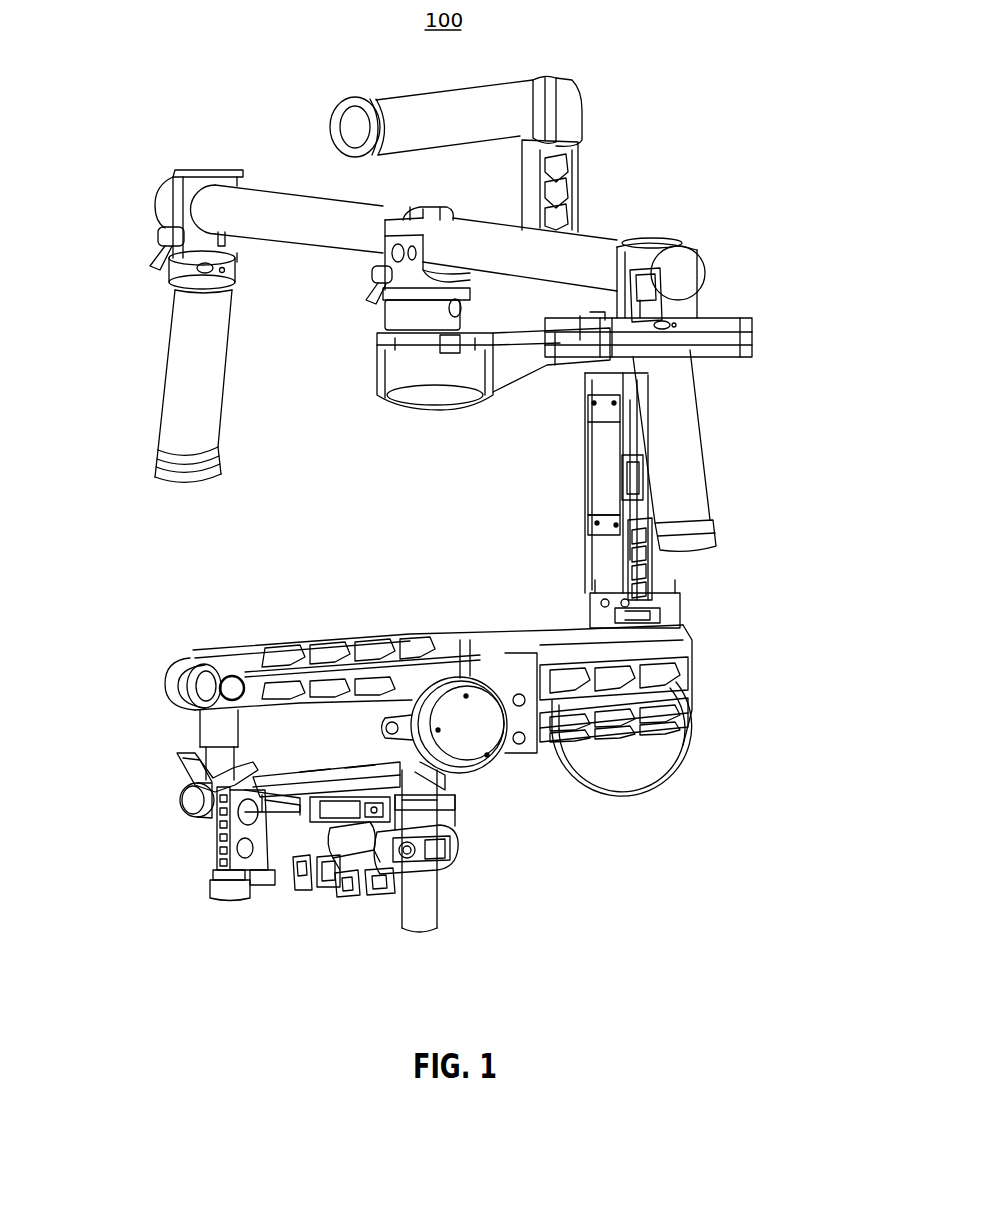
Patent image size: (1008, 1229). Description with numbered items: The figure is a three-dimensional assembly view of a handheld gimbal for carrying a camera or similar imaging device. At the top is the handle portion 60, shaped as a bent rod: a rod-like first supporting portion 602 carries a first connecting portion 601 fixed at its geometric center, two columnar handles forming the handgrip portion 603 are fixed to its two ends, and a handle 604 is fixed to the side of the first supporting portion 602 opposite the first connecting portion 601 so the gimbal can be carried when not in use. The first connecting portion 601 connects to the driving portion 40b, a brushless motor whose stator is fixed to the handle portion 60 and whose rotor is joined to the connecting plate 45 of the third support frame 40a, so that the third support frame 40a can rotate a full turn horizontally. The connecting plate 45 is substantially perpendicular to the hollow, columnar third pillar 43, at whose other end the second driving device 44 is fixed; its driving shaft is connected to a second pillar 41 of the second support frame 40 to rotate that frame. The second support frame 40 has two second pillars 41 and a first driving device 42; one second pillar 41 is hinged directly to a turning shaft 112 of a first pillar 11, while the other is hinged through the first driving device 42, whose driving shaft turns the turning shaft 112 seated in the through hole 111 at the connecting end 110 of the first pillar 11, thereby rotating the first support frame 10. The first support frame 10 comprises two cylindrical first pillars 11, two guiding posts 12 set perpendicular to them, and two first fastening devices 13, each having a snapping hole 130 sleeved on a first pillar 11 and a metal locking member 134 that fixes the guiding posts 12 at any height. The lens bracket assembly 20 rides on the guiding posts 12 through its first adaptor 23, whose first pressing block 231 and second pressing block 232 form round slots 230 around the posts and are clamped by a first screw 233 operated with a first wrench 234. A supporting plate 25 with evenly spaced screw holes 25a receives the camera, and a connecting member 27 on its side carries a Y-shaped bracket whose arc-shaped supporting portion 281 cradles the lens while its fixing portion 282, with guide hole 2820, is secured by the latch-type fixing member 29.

The first support frame 10 is at (465, 906).
The first pillar 11 is at (430, 907).
The guiding post 12 is at (345, 845).
The first fastening device 13 is at (352, 875).
The snapping hole 130 is at (440, 825).
The locking member 134 is at (452, 840).
The lens bracket assembly 20 is at (157, 753).
The connecting end 110 is at (203, 693).
The through hole 111 is at (233, 680).
The turning shaft 112 is at (236, 690).
The first adaptor 23 is at (285, 932).
The supporting plate 25 is at (303, 777).
The screw hole 25a is at (340, 773).
The connecting member 27 is at (258, 798).
The fixing member 29 is at (203, 800).
The round slot 230 is at (345, 842).
The first pressing block 231 is at (305, 860).
The second pressing block 232 is at (392, 815).
The first screw 233 is at (263, 882).
The first wrench 234 is at (205, 873).
The supporting portion 281 is at (185, 767).
The fixing portion 282 is at (210, 857).
The guide hole 2820 is at (223, 830).
The second support frame 40 is at (716, 764).
The third support frame 40a is at (557, 453).
The driving portion 40b is at (413, 375).
The second pillar 41 is at (553, 713).
The first driving device 42 is at (465, 718).
The third pillar 43 is at (633, 473).
The second driving device 44 is at (683, 648).
The connecting plate 45 is at (723, 327).
The handle portion 60 is at (657, 137).
The first connecting portion 601 is at (432, 313).
The first supporting portion 602 is at (285, 229).
The handgrip portion 603 is at (702, 440).
The handle 604 is at (540, 82).